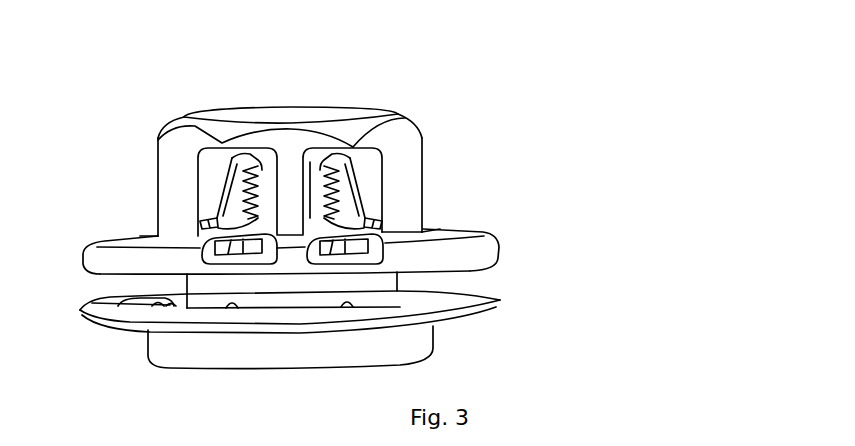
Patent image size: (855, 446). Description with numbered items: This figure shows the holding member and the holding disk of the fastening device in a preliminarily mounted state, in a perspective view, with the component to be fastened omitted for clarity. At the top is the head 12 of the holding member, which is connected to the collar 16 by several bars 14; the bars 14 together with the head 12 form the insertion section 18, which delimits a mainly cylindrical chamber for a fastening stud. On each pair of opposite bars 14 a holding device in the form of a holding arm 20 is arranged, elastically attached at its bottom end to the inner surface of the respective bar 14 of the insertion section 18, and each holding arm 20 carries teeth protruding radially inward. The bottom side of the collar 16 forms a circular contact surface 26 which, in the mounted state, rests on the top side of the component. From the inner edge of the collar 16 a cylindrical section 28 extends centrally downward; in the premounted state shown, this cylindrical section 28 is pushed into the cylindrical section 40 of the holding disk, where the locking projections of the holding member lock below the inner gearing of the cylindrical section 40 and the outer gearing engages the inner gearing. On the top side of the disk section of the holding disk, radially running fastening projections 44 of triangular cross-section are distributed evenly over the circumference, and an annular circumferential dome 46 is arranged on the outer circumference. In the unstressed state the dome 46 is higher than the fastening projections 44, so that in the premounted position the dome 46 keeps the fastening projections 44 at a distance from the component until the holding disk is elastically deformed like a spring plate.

The head 12 is at (232, 116).
The bars 14 is at (408, 173).
The collar 16 is at (487, 246).
The insertion section 18 is at (312, 170).
The holding arm 20 is at (348, 182).
The contact surface 26 is at (490, 274).
The cylindrical section 28 is at (202, 290).
The cylindrical section 40 is at (242, 353).
The fastening projections 44 is at (140, 300).
The dome 46 is at (497, 299).